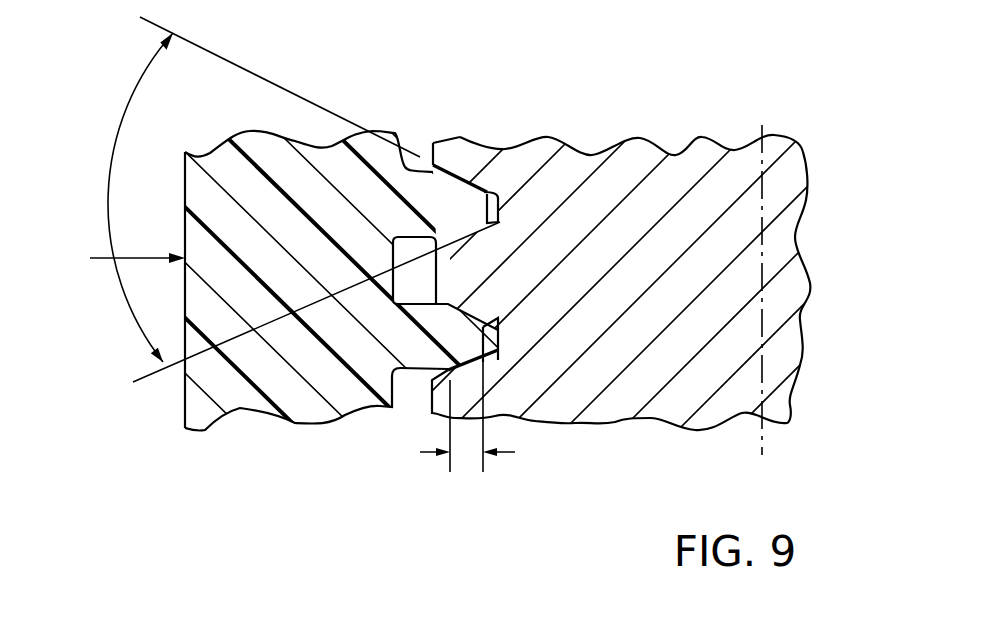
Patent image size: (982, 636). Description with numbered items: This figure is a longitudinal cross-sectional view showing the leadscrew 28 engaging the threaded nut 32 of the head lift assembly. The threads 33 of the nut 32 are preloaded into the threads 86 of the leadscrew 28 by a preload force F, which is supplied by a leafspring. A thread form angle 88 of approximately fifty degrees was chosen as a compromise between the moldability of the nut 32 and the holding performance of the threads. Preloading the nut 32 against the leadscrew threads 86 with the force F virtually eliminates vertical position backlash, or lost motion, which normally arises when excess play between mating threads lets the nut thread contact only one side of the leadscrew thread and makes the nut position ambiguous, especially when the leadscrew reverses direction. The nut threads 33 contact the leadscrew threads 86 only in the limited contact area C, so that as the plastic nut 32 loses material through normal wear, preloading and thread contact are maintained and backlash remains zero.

The leadscrew 28 is at (647, 160).
The nut 32 is at (233, 160).
The threads 33 is at (470, 201).
The threads 86 is at (470, 152).
The thread form angle 88 is at (108, 176).
The preload force F is at (123, 258).
The contact area C is at (478, 417).